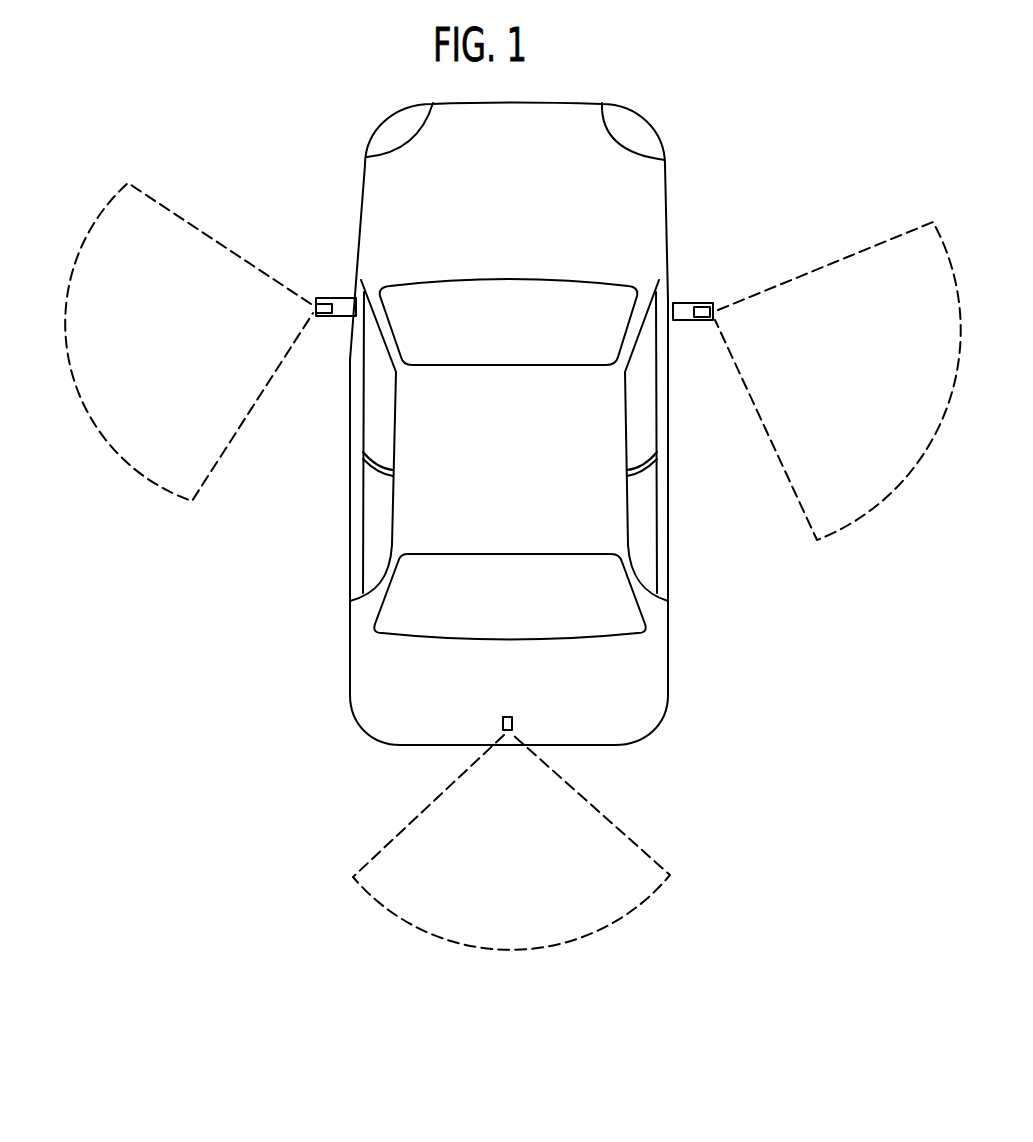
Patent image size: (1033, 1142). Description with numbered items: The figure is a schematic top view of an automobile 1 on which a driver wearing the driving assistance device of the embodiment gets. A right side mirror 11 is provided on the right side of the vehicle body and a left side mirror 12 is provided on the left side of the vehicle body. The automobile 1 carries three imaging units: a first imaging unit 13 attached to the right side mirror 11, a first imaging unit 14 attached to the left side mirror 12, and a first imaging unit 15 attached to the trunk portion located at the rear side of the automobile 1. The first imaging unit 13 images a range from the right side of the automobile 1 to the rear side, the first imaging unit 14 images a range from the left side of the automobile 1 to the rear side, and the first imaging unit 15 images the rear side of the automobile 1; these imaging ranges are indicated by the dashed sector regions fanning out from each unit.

The automobile 1 is at (790, 728).
The right side mirror 11 is at (676, 302).
The left side mirror 12 is at (350, 297).
The first imaging unit 13 is at (708, 303).
The first imaging unit 14 is at (319, 300).
The first imaging unit 15 is at (503, 724).